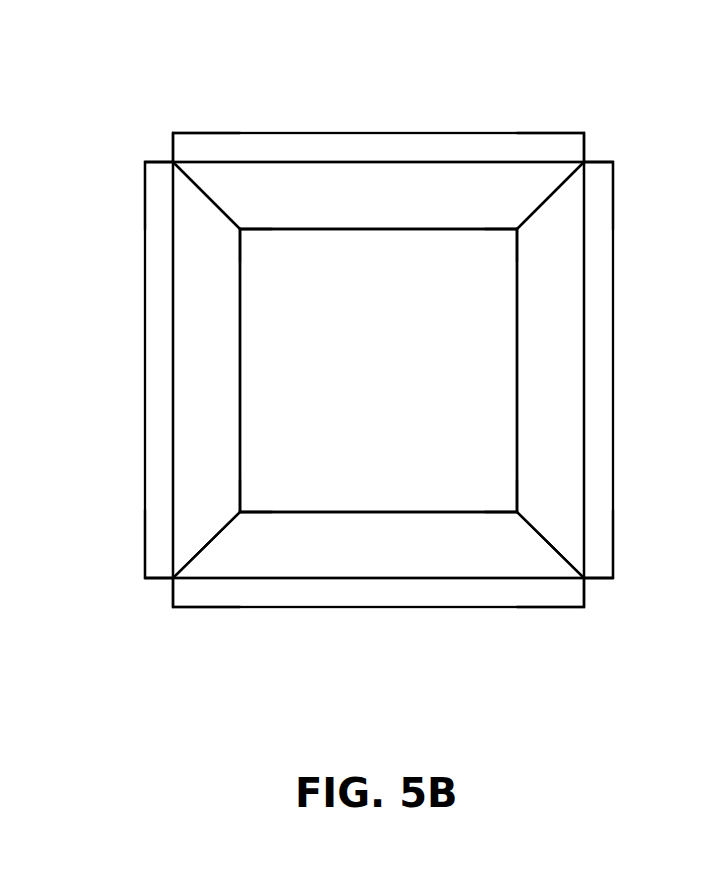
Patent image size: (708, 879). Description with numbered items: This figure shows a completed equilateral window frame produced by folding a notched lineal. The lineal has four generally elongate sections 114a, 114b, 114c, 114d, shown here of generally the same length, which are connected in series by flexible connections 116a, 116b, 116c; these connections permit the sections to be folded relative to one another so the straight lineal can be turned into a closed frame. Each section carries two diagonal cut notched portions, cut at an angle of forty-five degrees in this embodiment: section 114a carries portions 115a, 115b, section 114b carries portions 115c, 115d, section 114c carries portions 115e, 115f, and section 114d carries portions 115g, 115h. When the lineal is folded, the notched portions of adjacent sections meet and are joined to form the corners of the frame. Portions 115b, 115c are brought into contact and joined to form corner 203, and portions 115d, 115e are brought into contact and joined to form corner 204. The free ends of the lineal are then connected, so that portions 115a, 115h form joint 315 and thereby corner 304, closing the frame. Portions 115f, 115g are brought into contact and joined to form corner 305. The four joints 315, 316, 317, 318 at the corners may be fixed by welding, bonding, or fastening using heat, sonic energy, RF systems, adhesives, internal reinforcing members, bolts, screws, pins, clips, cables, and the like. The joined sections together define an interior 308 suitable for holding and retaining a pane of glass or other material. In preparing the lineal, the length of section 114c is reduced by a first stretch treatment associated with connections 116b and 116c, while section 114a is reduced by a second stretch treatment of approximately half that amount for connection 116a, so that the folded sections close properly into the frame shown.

The diagonal cut notched portion 115h is at (207, 195).
The elongate section 114d is at (375, 195).
The diagonal cut notched portion 115g is at (548, 192).
The connection 116c is at (588, 155).
The joint 315 is at (190, 180).
The joint 318 is at (567, 177).
The diagonal cut notched portion 115a is at (220, 210).
The diagonal cut notched portion 115f is at (539, 205).
The corner 304 is at (240, 229).
The corner 305 is at (517, 229).
The elongate section 114a is at (195, 367).
The interior 308 is at (400, 382).
The elongate section 114c is at (570, 372).
The corner 203 is at (240, 512).
The corner 204 is at (517, 512).
The diagonal cut notched portion 115b is at (222, 530).
The diagonal cut notched portion 115e is at (540, 530).
The joint 316 is at (185, 562).
The joint 317 is at (572, 560).
The connection 116a is at (168, 585).
The connection 116b is at (597, 588).
The diagonal cut notched portion 115c is at (207, 553).
The elongate section 114b is at (422, 550).
The diagonal cut notched portion 115d is at (553, 545).